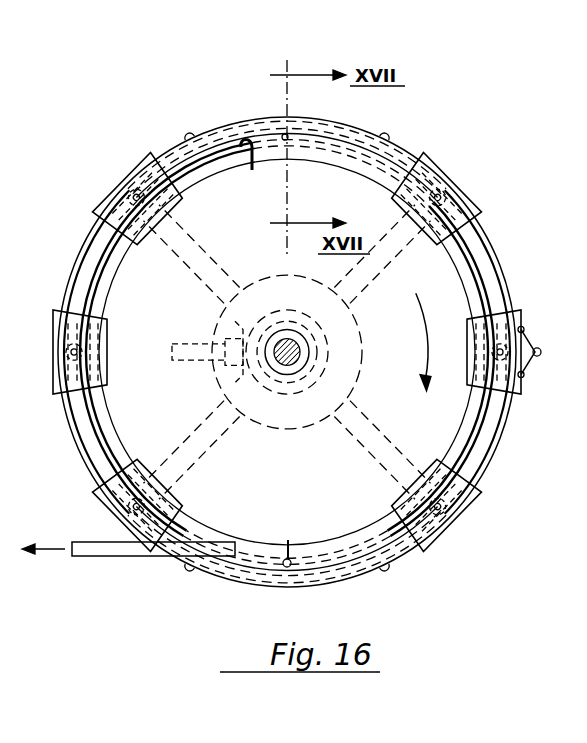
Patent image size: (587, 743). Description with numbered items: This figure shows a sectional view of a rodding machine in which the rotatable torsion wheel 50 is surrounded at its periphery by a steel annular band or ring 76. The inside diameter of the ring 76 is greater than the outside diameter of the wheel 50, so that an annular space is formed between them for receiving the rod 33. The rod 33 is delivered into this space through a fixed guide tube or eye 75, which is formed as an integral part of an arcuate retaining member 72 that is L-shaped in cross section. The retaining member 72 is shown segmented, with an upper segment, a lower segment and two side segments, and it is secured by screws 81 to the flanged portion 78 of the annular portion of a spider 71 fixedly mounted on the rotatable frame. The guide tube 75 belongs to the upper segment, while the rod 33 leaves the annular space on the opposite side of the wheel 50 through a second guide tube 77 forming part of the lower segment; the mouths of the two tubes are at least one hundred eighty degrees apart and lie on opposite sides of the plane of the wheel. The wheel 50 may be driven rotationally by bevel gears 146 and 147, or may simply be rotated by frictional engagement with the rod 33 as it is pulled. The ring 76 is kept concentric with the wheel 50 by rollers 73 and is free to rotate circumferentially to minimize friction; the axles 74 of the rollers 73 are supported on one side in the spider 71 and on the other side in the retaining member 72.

The torsion wheel 50 is at (182, 309).
The rod 33 is at (187, 178).
The spider 71 is at (187, 425).
The retaining member 72 is at (445, 177).
The rollers 73 is at (313, 122).
The axles 74 is at (443, 201).
The guide tube 75 is at (263, 157).
The annular band 76 is at (480, 282).
The guide tube 77 is at (313, 585).
The flanged portion 78 is at (85, 238).
The screws 81 is at (538, 351).
The bevel gear 146 is at (244, 330).
The bevel gear 147 is at (308, 314).